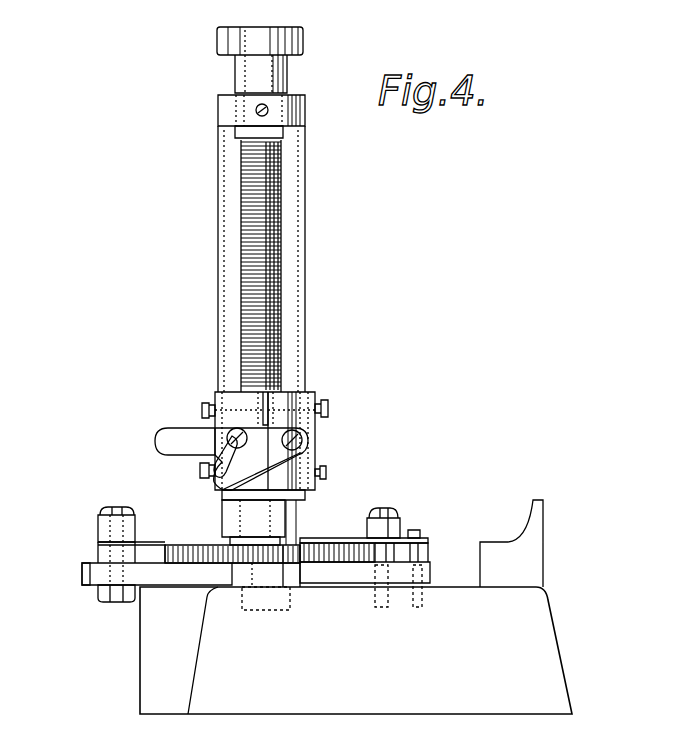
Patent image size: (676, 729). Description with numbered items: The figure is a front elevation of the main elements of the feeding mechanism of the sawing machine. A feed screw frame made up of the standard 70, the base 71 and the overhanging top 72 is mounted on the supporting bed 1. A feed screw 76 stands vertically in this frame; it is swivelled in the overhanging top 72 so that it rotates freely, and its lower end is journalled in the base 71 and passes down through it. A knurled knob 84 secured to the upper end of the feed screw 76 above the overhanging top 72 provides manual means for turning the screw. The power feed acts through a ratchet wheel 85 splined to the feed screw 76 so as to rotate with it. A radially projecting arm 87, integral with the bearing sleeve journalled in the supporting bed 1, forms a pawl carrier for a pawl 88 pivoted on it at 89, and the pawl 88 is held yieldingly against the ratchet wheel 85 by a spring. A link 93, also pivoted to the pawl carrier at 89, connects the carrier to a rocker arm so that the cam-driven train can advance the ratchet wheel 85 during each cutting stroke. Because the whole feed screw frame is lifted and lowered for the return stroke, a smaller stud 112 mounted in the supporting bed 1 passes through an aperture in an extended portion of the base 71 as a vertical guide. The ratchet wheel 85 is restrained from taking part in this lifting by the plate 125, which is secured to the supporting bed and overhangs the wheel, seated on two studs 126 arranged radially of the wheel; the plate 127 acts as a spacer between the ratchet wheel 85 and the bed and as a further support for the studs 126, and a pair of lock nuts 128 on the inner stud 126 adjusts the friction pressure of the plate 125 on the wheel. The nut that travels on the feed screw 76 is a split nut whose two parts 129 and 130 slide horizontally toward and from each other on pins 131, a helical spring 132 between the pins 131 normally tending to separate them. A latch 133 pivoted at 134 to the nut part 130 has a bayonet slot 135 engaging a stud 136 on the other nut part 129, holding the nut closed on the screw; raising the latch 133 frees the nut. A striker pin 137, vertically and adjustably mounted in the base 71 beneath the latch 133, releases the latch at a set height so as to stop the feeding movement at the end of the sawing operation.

The supporting bed 1 is at (545, 632).
The standard 70 is at (300, 276).
The base 71 is at (230, 522).
The overhanging top 72 is at (228, 107).
The feed screw 76 is at (245, 242).
The knurled knob 84 is at (275, 48).
The ratchet wheel 85 is at (180, 545).
The radially projecting arm 87 is at (82, 580).
The pawl 88 is at (150, 590).
The pivot 89 is at (95, 552).
The link 93 is at (100, 530).
The stud 112 is at (290, 595).
The plate 125 is at (320, 540).
The studs 126 is at (405, 605).
The plate 127 is at (345, 592).
The lock nuts 128 is at (383, 512).
The nut part 129 is at (228, 392).
The nut part 130 is at (312, 392).
The pins 131 is at (330, 405).
The helical spring 132 is at (200, 476).
The latch 133 is at (186, 428).
The pivot 134 is at (302, 440).
The bayonet slot 135 is at (220, 462).
The stud 136 is at (232, 430).
The striker pin 137 is at (262, 470).